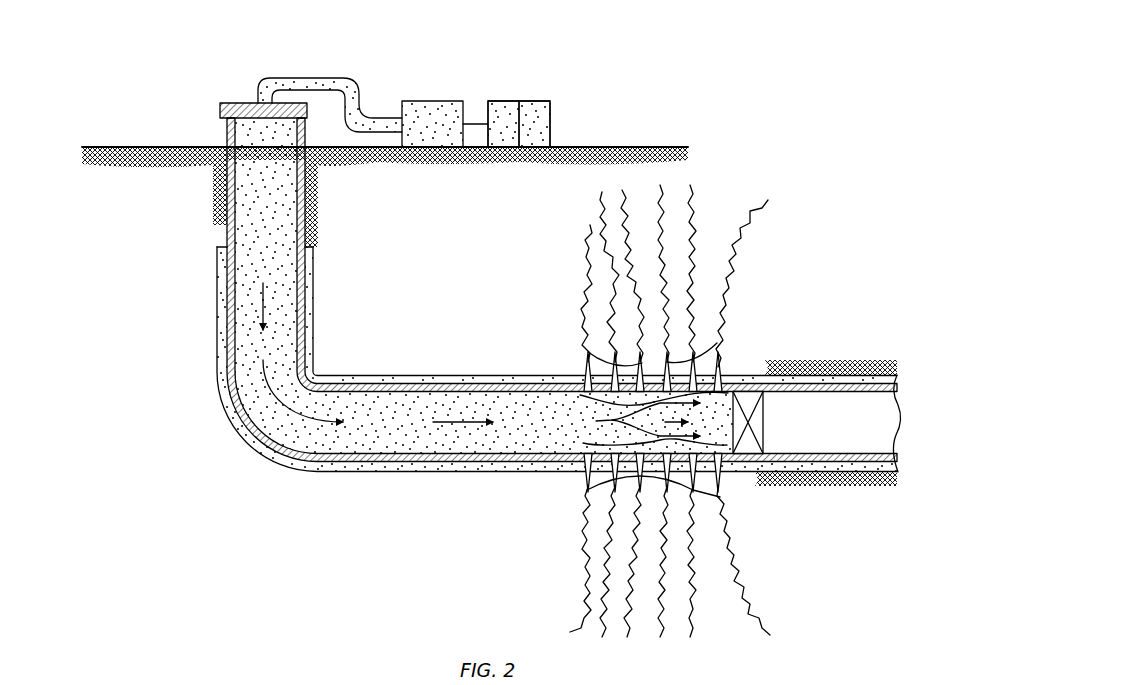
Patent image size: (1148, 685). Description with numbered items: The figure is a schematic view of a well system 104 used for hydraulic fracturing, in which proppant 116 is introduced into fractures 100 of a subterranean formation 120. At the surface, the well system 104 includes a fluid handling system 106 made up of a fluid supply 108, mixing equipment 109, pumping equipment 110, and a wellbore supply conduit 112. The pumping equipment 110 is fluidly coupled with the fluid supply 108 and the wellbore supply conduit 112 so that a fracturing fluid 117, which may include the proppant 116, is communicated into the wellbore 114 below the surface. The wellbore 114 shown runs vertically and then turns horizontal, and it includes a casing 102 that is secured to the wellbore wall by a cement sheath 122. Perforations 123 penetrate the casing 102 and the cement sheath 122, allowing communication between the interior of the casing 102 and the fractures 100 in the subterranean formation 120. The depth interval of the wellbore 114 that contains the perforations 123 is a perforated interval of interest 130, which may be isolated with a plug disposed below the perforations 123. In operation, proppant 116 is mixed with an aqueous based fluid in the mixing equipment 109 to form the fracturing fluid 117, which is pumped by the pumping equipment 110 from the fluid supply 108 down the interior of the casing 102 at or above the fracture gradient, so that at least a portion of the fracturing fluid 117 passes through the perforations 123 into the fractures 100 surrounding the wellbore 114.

The fractures 100 is at (590, 225).
The casing 102 is at (487, 382).
The well system 104 is at (145, 106).
The fluid handling system 106 is at (549, 70).
The fluid supply 108 is at (537, 100).
The mixing equipment 109 is at (505, 100).
The pumping equipment 110 is at (430, 100).
The wellbore supply conduit 112 is at (331, 76).
The wellbore 114 is at (312, 320).
The proppant 116 is at (427, 403).
The fracturing fluid 117 is at (265, 312).
The subterranean formation 120 is at (368, 202).
The cement sheath 122 is at (555, 377).
The perforations 123 is at (586, 375).
The perforated interval of interest 130 is at (640, 418).